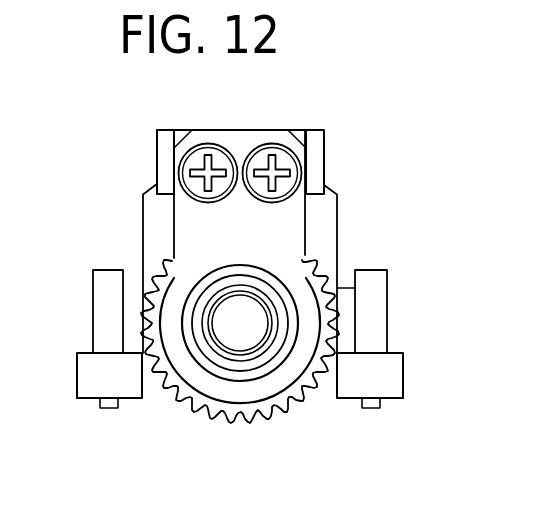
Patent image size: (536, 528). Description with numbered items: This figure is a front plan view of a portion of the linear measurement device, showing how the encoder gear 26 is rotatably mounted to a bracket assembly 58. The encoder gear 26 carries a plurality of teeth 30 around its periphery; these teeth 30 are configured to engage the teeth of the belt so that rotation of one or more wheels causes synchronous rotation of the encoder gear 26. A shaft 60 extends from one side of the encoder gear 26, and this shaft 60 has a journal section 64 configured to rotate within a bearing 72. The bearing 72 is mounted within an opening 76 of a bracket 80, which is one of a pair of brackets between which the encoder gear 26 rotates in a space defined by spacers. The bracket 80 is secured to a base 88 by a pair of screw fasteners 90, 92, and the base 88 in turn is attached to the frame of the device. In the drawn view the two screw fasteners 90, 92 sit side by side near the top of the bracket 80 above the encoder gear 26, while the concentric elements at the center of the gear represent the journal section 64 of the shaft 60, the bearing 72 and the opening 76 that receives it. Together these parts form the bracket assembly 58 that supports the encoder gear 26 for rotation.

The bracket assembly 58 is at (141, 181).
The base 88 is at (158, 130).
The bracket 80 is at (182, 136).
The screw fastener 90 is at (209, 143).
The screw fastener 92 is at (253, 146).
The bearing 72 is at (217, 270).
The opening 76 is at (247, 268).
The shaft 60 is at (269, 315).
The journal section 64 is at (257, 331).
The encoder gear 26 is at (240, 374).
The teeth 30 is at (220, 424).